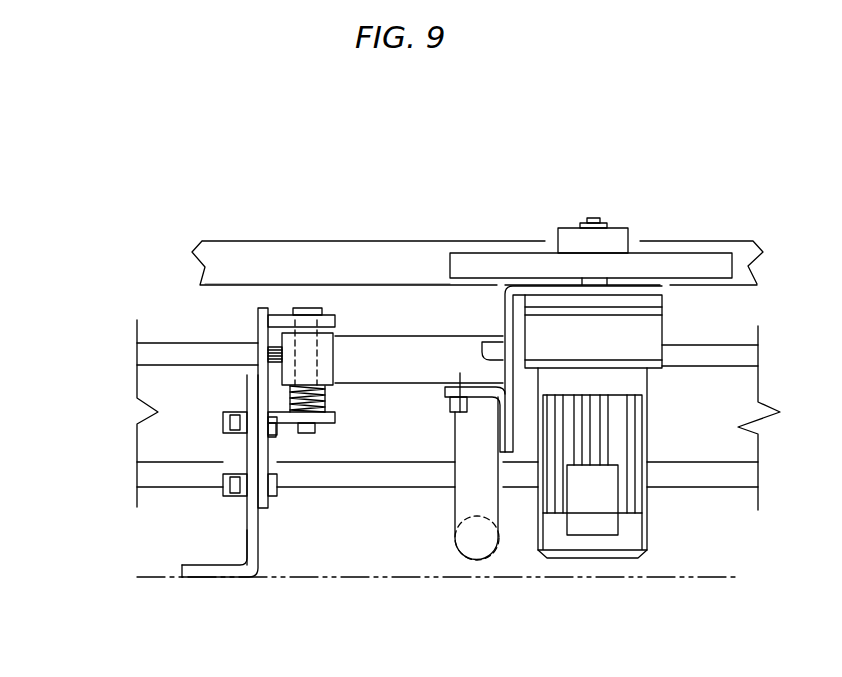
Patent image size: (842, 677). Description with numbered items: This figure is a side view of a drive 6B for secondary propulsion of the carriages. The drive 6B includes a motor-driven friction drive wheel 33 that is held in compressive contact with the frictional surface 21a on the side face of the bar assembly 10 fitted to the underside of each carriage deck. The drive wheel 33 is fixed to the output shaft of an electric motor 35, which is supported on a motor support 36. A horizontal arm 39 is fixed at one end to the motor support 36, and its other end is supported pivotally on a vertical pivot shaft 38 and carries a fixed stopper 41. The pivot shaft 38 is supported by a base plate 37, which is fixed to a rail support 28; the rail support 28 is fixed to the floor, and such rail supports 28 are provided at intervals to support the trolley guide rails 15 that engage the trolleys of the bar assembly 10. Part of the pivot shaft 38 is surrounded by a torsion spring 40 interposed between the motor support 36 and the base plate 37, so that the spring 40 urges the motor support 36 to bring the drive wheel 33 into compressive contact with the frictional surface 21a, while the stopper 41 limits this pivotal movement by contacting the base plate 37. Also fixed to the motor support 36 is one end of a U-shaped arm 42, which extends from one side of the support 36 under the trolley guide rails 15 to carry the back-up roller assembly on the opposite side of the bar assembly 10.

The bar assembly 10 is at (327, 241).
The frictional surface 21a is at (288, 258).
The friction drive wheel 33 is at (480, 266).
The drive for secondary propulsion 6B is at (646, 241).
The trolley guide rails 15 is at (157, 443).
The stopper 41 is at (258, 353).
The vertical pivot shaft 38 is at (322, 355).
The torsion spring 40 is at (327, 403).
The base plate 37 is at (262, 455).
The rail support 28 is at (253, 533).
The horizontal arm 39 is at (427, 362).
The motor support 36 is at (482, 340).
The U-shaped arm 42 is at (475, 548).
The electric motor 35 is at (636, 532).